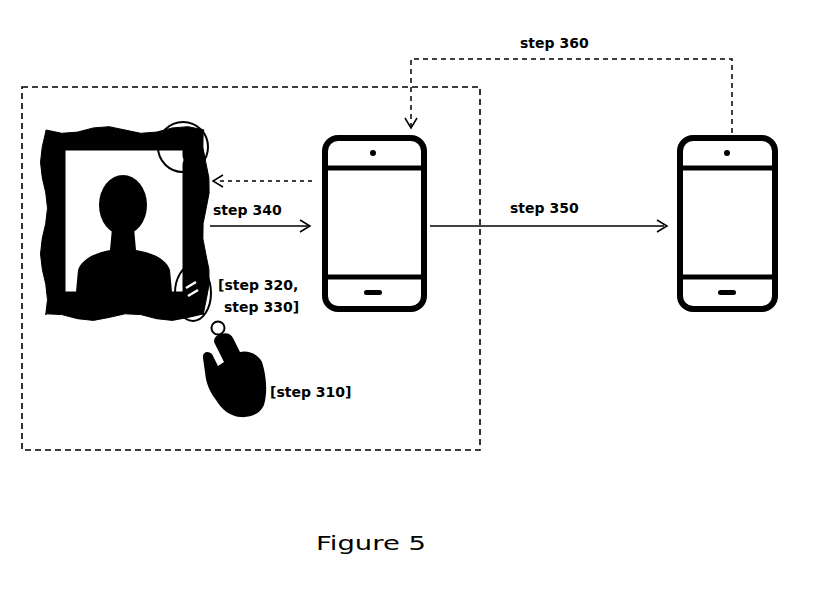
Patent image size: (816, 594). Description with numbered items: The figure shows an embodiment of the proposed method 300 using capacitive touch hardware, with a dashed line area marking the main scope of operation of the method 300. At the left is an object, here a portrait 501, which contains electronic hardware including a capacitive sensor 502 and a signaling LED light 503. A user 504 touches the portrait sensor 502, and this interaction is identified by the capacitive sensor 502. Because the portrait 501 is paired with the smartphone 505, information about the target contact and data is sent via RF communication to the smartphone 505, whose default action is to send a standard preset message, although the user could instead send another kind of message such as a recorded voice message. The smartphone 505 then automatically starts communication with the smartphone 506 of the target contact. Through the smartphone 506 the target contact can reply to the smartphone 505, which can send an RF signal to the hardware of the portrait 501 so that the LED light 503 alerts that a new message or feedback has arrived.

The proposed method 300 is at (263, 287).
The portrait 501 is at (125, 212).
The capacitive sensor 502 is at (181, 308).
The signaling LED light 503 is at (201, 145).
The user 504 is at (252, 382).
The smartphone 505 is at (374, 240).
The smartphone of the target contact 506 is at (727, 240).